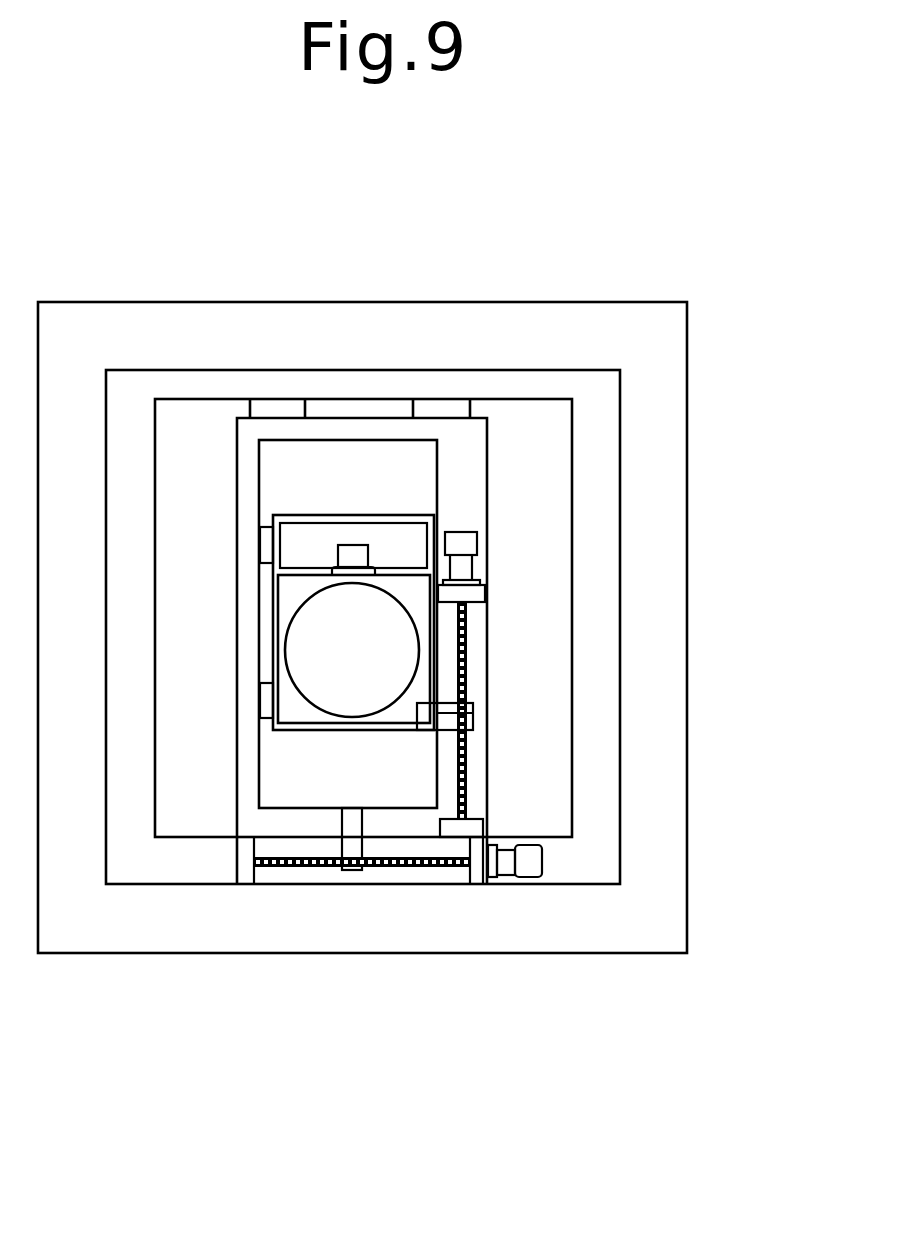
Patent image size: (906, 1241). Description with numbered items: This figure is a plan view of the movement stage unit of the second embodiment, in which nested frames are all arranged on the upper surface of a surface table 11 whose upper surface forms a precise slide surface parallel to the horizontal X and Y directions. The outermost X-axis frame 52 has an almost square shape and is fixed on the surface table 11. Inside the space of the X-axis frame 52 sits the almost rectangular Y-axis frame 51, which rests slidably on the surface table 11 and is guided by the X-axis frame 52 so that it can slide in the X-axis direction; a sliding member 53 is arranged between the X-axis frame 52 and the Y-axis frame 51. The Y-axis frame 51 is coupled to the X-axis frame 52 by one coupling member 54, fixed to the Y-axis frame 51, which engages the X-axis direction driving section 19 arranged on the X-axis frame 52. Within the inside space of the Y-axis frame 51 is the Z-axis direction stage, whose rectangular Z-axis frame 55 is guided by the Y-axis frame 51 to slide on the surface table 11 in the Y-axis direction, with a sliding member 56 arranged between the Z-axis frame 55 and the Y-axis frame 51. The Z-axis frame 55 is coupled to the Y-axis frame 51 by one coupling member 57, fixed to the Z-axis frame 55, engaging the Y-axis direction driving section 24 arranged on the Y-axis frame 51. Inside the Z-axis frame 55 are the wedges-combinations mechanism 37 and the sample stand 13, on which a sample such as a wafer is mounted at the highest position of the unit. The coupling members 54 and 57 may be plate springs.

The surface table 11 is at (237, 942).
The sample stand 13 is at (380, 690).
The X-axis direction driving section 19 is at (533, 877).
The Y-axis direction driving section 24 is at (460, 545).
The wedges-combinations mechanism 37 is at (425, 628).
The Y-axis frame 51 is at (473, 498).
The X-axis frame 52 is at (607, 864).
The sliding member 53 is at (430, 407).
The coupling member 54 is at (350, 866).
The Z-axis frame 55 is at (297, 513).
The sliding member 56 is at (268, 693).
The coupling member 57 is at (462, 770).